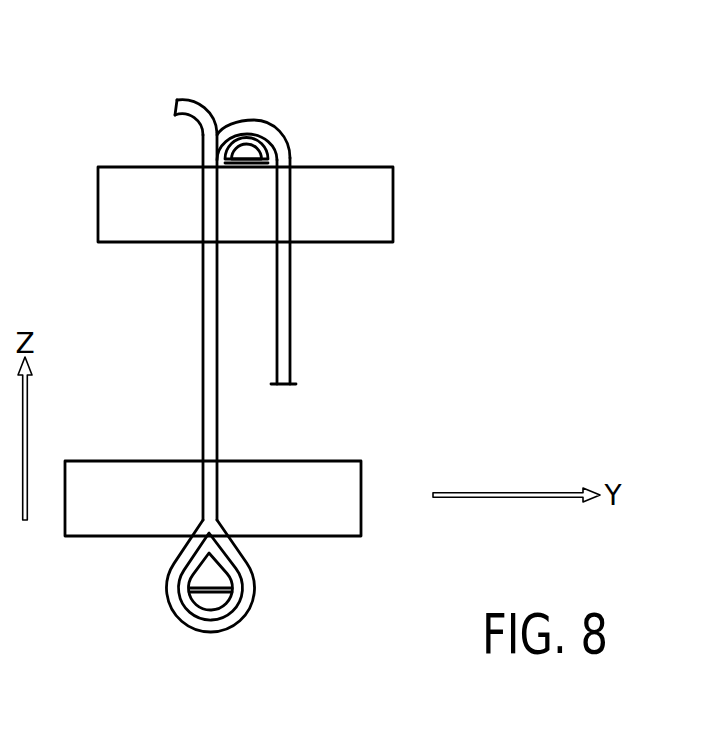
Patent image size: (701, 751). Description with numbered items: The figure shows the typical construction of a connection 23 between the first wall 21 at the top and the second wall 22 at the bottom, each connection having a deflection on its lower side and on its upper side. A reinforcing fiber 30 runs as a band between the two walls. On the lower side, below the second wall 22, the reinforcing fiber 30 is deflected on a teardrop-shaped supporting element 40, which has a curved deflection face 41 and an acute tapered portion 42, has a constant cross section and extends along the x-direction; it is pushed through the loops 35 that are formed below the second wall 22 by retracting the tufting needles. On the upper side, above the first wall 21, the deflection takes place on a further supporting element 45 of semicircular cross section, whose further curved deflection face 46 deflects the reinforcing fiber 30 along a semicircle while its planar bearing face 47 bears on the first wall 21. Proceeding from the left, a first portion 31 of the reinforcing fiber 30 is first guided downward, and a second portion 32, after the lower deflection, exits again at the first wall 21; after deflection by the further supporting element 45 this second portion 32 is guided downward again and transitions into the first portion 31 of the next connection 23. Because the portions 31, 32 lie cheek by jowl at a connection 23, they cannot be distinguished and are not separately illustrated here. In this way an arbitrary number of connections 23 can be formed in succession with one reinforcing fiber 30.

The first wall 21 is at (383, 199).
The second wall 22 is at (353, 483).
The connection 23 is at (213, 425).
The reinforcing fiber 30 is at (177, 106).
The first portion 31 is at (193, 101).
The second portion 32 is at (224, 128).
The loop 35 is at (217, 587).
The supporting element 40 is at (212, 597).
The curved deflection face 41 is at (190, 603).
The acute tapered portion 42 is at (213, 568).
The further supporting element 45 is at (245, 152).
The further curved deflection face 46 is at (251, 148).
The planar bearing face 47 is at (253, 165).